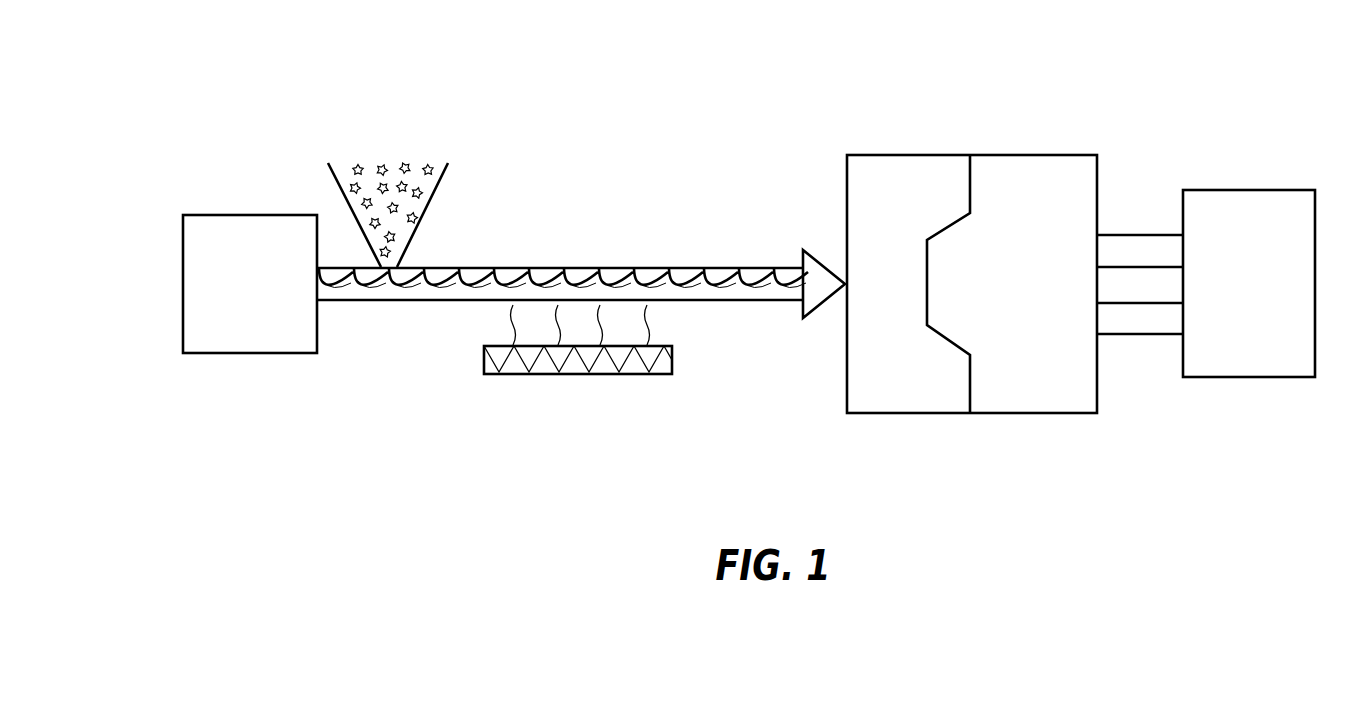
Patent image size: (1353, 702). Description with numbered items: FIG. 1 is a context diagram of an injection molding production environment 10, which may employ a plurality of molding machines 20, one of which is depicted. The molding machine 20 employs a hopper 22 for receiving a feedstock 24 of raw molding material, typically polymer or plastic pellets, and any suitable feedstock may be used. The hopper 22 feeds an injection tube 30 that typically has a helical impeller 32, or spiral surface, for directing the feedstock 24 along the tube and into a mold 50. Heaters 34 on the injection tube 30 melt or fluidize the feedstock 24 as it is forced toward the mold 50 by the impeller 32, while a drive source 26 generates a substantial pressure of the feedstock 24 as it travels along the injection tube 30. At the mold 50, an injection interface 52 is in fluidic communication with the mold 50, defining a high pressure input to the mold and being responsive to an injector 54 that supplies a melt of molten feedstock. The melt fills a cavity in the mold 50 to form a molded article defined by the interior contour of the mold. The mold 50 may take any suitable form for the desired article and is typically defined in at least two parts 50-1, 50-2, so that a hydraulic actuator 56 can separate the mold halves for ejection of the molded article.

The injection molding environment 10 is at (552, 157).
The molding machine 20 is at (224, 133).
The hopper 22 is at (433, 194).
The feedstock 24 is at (386, 150).
The drive source 26 is at (233, 327).
The injection tube 30 is at (652, 266).
The helical impeller 32 is at (710, 301).
The heaters 34 is at (573, 375).
The mold 50 is at (978, 332).
The first mold part 50-1 is at (905, 414).
The second mold part 50-2 is at (1033, 414).
The injection interface 52 is at (832, 258).
The injector 54 is at (820, 314).
The hydraulic actuator 56 is at (1238, 337).